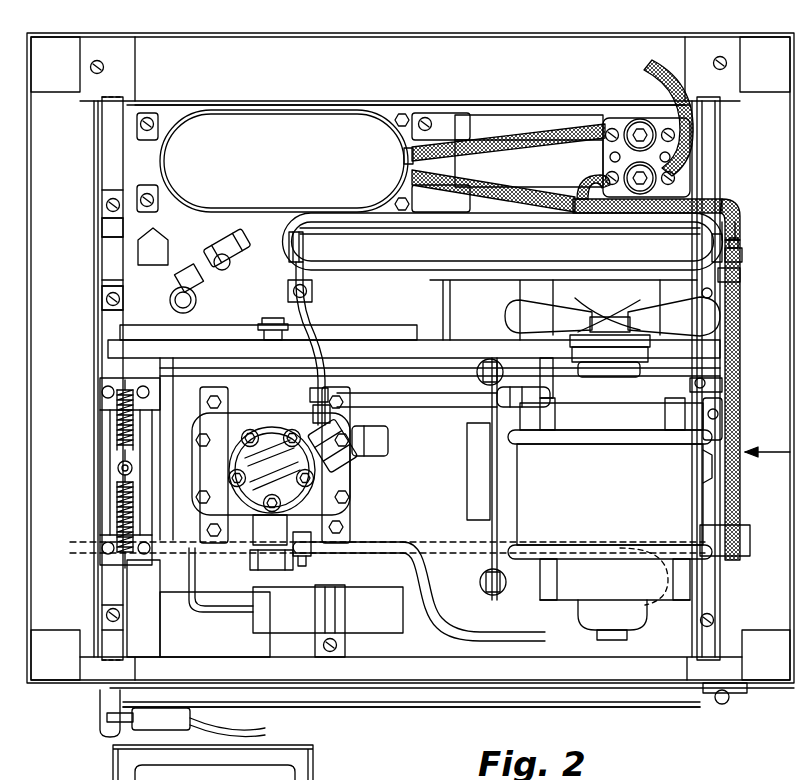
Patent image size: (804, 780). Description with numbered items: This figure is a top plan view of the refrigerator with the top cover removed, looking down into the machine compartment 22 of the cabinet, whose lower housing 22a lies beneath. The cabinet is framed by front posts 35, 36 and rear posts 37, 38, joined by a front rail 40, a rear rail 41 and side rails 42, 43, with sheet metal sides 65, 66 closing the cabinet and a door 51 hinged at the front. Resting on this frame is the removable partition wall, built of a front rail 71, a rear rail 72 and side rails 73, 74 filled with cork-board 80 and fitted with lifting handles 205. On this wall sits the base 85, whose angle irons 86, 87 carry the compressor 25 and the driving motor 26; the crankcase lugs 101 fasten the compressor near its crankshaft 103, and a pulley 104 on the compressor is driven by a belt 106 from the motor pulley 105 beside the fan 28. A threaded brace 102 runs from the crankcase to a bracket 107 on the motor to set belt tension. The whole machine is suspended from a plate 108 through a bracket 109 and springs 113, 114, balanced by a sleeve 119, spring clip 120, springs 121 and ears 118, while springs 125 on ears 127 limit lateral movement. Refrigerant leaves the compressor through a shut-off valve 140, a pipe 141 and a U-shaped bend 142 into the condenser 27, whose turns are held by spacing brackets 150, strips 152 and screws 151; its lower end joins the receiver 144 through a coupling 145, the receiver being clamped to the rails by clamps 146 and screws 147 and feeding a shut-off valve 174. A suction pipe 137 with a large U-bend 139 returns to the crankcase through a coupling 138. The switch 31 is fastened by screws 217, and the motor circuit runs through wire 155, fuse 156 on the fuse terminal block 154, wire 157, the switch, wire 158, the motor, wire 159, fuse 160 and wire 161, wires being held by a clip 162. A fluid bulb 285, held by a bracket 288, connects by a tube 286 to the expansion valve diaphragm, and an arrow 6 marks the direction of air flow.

The machine compartment 22 is at (238, 70).
The lower housing 22a is at (297, 742).
The rear rail 41 is at (425, 52).
The rear post 37 is at (58, 52).
The rear post 38 is at (754, 50).
The side rail 42 is at (120, 78).
The side rail 43 is at (693, 53).
The front post 35 is at (55, 665).
The front post 36 is at (765, 665).
The sheet metal side 65 is at (32, 578).
The sheet metal side 66 is at (790, 577).
The front rail 40 is at (470, 668).
The door 51 is at (563, 697).
The front rail 71 is at (373, 647).
The handle 205 is at (712, 110).
The switch 31 is at (275, 120).
The screw 217 is at (145, 124).
The rear rail 72 is at (445, 118).
The metal plate 108 is at (507, 123).
The fuse 156 is at (630, 123).
The fuse terminal block 154 is at (608, 115).
The wire 157 is at (466, 137).
The wire 158 is at (479, 193).
The fuse 160 is at (650, 190).
The wire 161 is at (680, 165).
The wire 155 is at (693, 147).
The wire 159 is at (735, 207).
The side rail 74 is at (718, 357).
The direction arrow 6 is at (767, 469).
The condenser 27 is at (628, 228).
The U-shaped bend 142 is at (456, 221).
The strip 152 is at (305, 248).
The clip 162 is at (737, 242).
The screw 151 is at (736, 258).
The condenser spacing and supporting bracket 150 is at (276, 232).
The pipe 141 is at (303, 311).
The clamp 146 is at (107, 230).
The screw 147 is at (108, 299).
The shut-off valve 174 is at (155, 243).
The receiver 144 is at (197, 230).
The coupling 145 is at (225, 258).
The crankshaft 103 is at (268, 320).
The side rail 73 is at (102, 319).
The pulley 104 is at (433, 347).
The belt 106 is at (437, 343).
The spring 113 is at (483, 370).
The spring 114 is at (480, 588).
The bracket 107 is at (525, 388).
The bracket 109 is at (493, 478).
The angle iron 86 is at (160, 385).
The fan 28 is at (710, 320).
The pulley 105 is at (647, 365).
The driving motor 26 is at (623, 502).
The ear 127 is at (697, 382).
The spring 125 is at (713, 414).
The U-bend 139 is at (570, 627).
The compressor 25 is at (345, 478).
The shut-off valve 140 is at (353, 443).
The brace 102 is at (433, 396).
The coupling 138 is at (303, 550).
The lug 101 is at (337, 519).
The suction pipe 137 is at (410, 541).
The base 85 is at (80, 451).
The sleeve 119 is at (117, 469).
The spring clip 120 is at (117, 478).
The spring 121 is at (117, 517).
The ear 118 is at (117, 553).
The angle iron 87 is at (167, 545).
The cork-board 80 is at (182, 580).
The tube 286 is at (197, 575).
The fluid bulb 285 is at (270, 630).
The bracket 288 is at (317, 618).